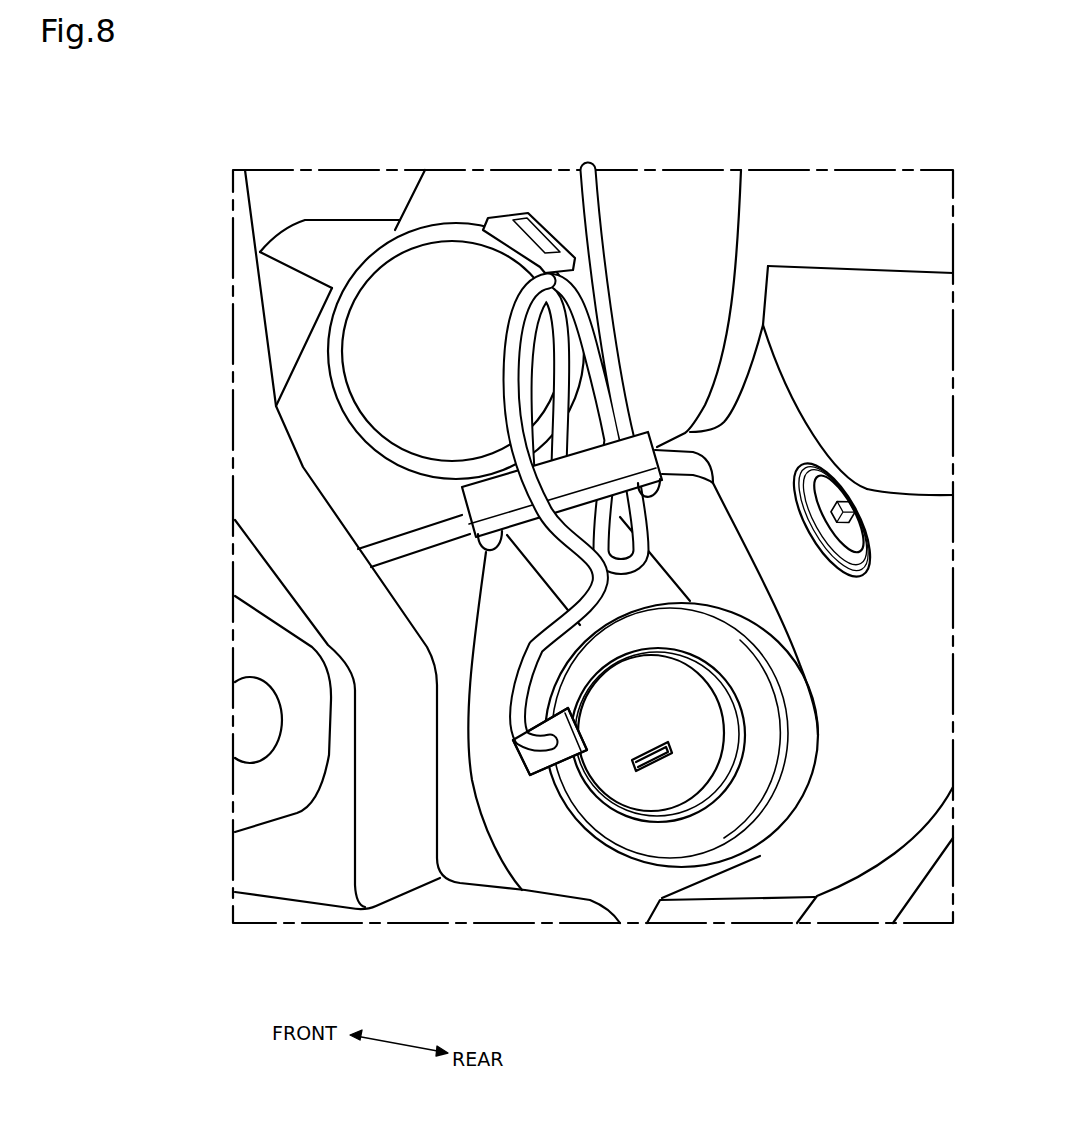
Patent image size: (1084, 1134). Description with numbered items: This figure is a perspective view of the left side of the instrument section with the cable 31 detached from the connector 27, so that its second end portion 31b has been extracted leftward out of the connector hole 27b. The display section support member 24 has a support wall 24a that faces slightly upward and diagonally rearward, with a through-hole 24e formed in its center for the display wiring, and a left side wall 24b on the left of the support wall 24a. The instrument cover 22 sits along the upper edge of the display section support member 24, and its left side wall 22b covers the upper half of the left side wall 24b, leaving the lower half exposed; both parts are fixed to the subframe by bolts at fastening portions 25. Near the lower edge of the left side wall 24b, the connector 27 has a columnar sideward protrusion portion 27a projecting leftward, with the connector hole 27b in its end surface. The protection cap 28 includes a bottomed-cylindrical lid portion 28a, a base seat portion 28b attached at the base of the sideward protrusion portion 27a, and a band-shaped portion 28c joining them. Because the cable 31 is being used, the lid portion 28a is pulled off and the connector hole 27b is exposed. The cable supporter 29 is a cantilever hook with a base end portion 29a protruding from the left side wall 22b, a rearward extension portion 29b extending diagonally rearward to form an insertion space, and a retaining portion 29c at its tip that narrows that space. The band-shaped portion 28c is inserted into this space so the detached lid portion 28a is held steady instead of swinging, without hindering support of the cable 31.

The instrument cover 22 is at (768, 284).
The left side wall 22b is at (487, 186).
The display section support member 24 is at (833, 886).
The support wall 24a is at (902, 523).
The left side wall 24b is at (523, 815).
The through-hole 24e is at (826, 441).
The fastening portions 25 is at (848, 533).
The connector 27 is at (726, 697).
The sideward protrusion portion 27a is at (672, 676).
The connector hole 27b is at (650, 762).
The protection cap 28 is at (362, 438).
The lid portion 28a is at (385, 357).
The base seat portion 28b is at (740, 797).
The band-shaped portion 28c is at (545, 562).
The cable supporter 29 is at (645, 430).
The base end portion 29a is at (488, 552).
The rearward extension portion 29b is at (507, 445).
The retaining portion 29c is at (655, 490).
The cable 31 is at (600, 277).
The second end portion 31b is at (594, 748).